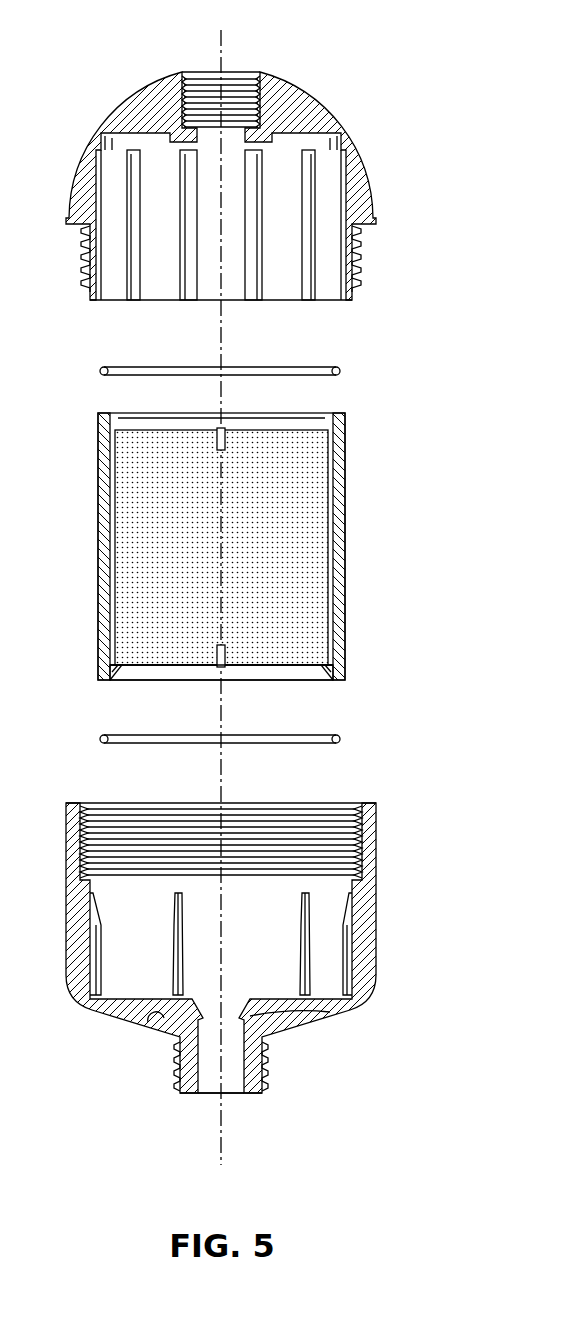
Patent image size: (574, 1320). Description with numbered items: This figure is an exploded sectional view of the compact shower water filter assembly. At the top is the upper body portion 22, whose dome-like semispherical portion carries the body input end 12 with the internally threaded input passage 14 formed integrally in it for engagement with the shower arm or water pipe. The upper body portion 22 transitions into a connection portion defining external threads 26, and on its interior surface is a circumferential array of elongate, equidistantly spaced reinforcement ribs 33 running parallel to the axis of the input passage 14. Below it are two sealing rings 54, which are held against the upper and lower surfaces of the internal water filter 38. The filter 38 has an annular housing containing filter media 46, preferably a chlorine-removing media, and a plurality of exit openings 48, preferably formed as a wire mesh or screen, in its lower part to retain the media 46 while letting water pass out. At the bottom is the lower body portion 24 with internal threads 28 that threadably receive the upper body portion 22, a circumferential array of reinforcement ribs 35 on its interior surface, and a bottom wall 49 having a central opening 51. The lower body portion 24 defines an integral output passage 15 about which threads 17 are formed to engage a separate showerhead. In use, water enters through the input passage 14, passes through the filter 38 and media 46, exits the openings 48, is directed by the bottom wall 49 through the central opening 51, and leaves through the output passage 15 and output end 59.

The body input end 12 is at (256, 78).
The threaded input passage 14 is at (190, 68).
The output passage 15 is at (247, 1091).
The threads 17 is at (262, 1057).
The upper body portion 22 is at (354, 128).
The lower body portion 24 is at (380, 921).
The external threads 26 is at (362, 262).
The internal threads 28 is at (360, 832).
The reinforcement ribs 33 is at (188, 277).
The reinforcement ribs 35 is at (172, 958).
The internal water filter 38 is at (271, 566).
The filter media 46 is at (318, 590).
The exit openings 48 is at (262, 670).
The bottom wall 49 is at (143, 1018).
The central opening 51 is at (257, 1018).
The sealing rings 54 is at (340, 372).
The output end 59 is at (192, 1095).